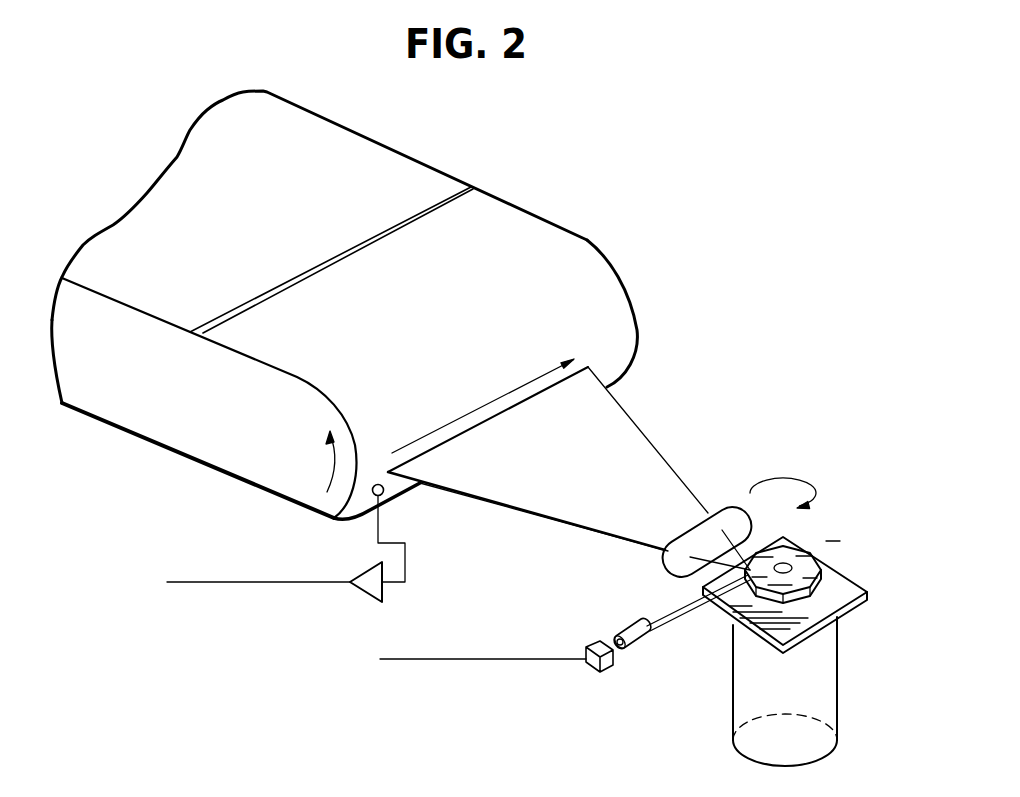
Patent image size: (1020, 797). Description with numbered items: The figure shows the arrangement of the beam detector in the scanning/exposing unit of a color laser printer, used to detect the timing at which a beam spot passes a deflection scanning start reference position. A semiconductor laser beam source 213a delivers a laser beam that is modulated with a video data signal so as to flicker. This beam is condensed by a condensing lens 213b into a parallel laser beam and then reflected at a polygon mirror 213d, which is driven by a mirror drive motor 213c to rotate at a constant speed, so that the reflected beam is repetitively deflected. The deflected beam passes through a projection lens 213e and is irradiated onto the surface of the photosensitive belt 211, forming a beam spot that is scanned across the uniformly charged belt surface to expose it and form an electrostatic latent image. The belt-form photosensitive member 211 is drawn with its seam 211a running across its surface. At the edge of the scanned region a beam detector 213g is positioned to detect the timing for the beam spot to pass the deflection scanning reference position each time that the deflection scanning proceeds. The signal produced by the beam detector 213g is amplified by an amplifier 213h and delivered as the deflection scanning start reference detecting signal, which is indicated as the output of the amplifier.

The photosensitive belt 211 is at (557, 223).
The seam 211a is at (433, 200).
The semiconductor laser beam source 213a is at (588, 673).
The condensing lens 213b is at (623, 630).
The mirror drive motor 213c is at (833, 692).
The polygon mirror 213d is at (813, 560).
The projection lens 213e is at (663, 570).
The beam detector 213g is at (377, 484).
The amplifier 213h is at (360, 593).